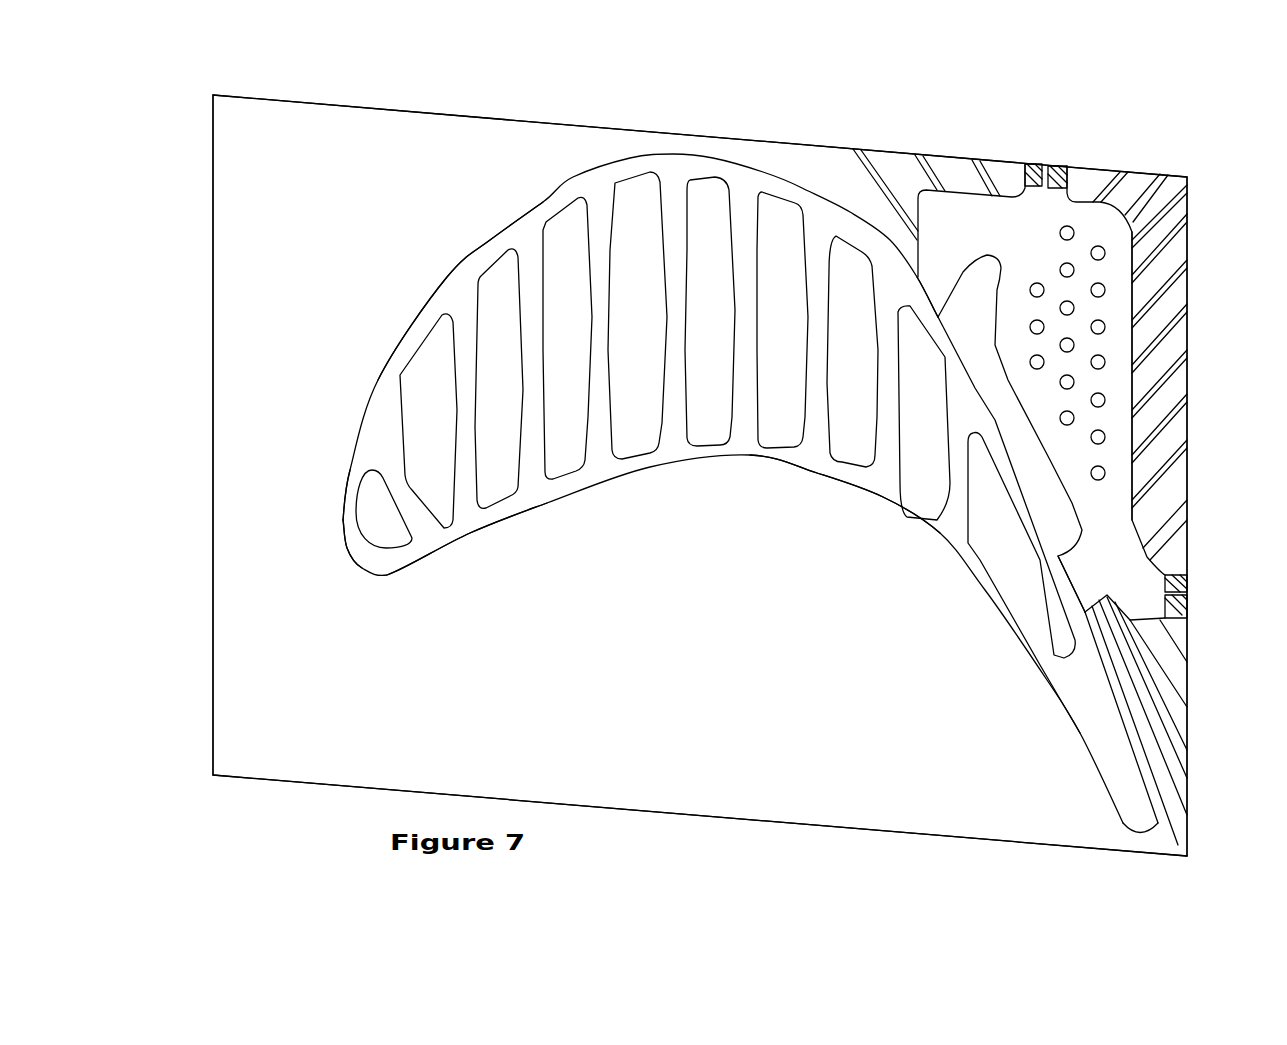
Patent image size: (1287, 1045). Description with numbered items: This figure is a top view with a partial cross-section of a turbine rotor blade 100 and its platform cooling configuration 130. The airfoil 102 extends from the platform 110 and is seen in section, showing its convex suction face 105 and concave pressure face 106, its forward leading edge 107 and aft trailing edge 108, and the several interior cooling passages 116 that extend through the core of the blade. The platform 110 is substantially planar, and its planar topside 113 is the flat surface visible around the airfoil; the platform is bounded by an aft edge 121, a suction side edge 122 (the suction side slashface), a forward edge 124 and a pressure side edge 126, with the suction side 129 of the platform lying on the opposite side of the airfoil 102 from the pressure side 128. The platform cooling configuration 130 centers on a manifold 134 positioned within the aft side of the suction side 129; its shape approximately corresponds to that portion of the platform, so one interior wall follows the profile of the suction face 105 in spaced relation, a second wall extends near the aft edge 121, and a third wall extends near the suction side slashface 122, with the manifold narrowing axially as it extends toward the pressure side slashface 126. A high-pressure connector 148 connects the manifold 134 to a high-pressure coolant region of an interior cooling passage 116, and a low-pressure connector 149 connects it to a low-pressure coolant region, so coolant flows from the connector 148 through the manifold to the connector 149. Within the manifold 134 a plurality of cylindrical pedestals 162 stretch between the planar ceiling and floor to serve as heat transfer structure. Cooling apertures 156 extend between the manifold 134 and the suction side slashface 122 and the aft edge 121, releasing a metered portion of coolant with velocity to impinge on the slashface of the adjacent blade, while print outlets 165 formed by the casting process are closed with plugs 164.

The turbine rotor blade 100 is at (1000, 96).
The airfoil 102 is at (742, 185).
The suction face 105 is at (448, 275).
The pressure face 106 is at (467, 538).
The leading edge 107 is at (368, 568).
The trailing edge 108 is at (1153, 833).
The platform 110 is at (886, 215).
The topside 113 is at (899, 567).
The cooling passages 116 is at (518, 395).
The aft edge 121 is at (1187, 523).
The suction side edge 122 is at (478, 117).
The forward edge 124 is at (213, 134).
The pressure side edge 126 is at (278, 780).
The pressure side 128 is at (719, 700).
The suction side 129 is at (456, 175).
The platform cooling configuration 130 is at (1208, 218).
The manifold 134 is at (1039, 230).
The high-pressure connector 148 is at (930, 322).
The low-pressure connector 149 is at (1070, 604).
The cooling apertures 156 is at (1148, 185).
The pedestals 162 is at (1029, 364).
The plugs 164 is at (1033, 166).
The print outlets 165 is at (1058, 168).